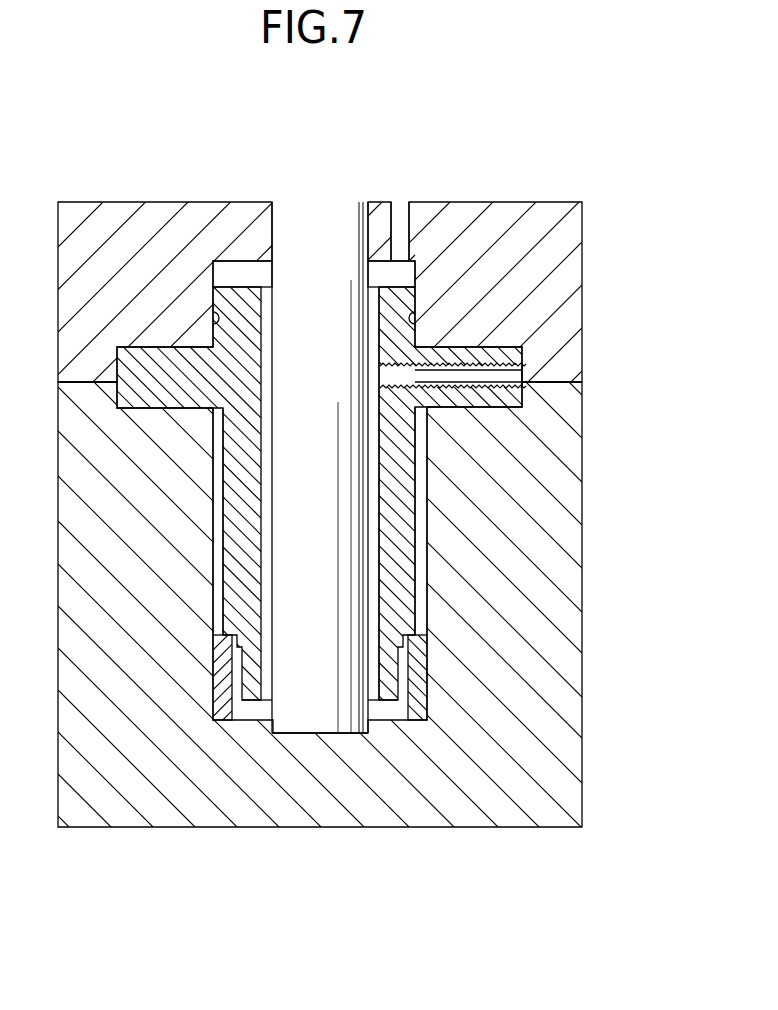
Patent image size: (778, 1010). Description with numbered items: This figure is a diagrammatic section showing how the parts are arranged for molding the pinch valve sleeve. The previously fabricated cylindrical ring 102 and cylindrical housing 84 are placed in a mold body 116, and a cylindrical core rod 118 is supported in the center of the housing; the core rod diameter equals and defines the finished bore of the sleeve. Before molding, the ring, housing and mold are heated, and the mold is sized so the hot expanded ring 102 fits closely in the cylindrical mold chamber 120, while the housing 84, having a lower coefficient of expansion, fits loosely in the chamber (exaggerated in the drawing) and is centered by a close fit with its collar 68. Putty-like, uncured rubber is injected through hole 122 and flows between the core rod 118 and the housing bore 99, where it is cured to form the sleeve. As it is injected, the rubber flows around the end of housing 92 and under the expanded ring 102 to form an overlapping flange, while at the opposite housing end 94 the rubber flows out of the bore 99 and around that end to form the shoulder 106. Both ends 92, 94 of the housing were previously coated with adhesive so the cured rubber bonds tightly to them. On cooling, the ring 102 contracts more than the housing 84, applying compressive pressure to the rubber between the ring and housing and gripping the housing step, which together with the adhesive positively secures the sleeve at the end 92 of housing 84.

The collar 68 is at (507, 346).
The cylindrical housing 84 is at (415, 438).
The end of housing 92 is at (319, 854).
The end of housing 94 is at (189, 175).
The housing bore 99 is at (395, 478).
The cylindrical ring 102 is at (428, 653).
The shoulder 106 is at (225, 273).
The mold body 116 is at (599, 346).
The cylindrical core rod 118 is at (315, 225).
The cylindrical mold chamber 120 is at (428, 552).
The hole 122 is at (399, 201).